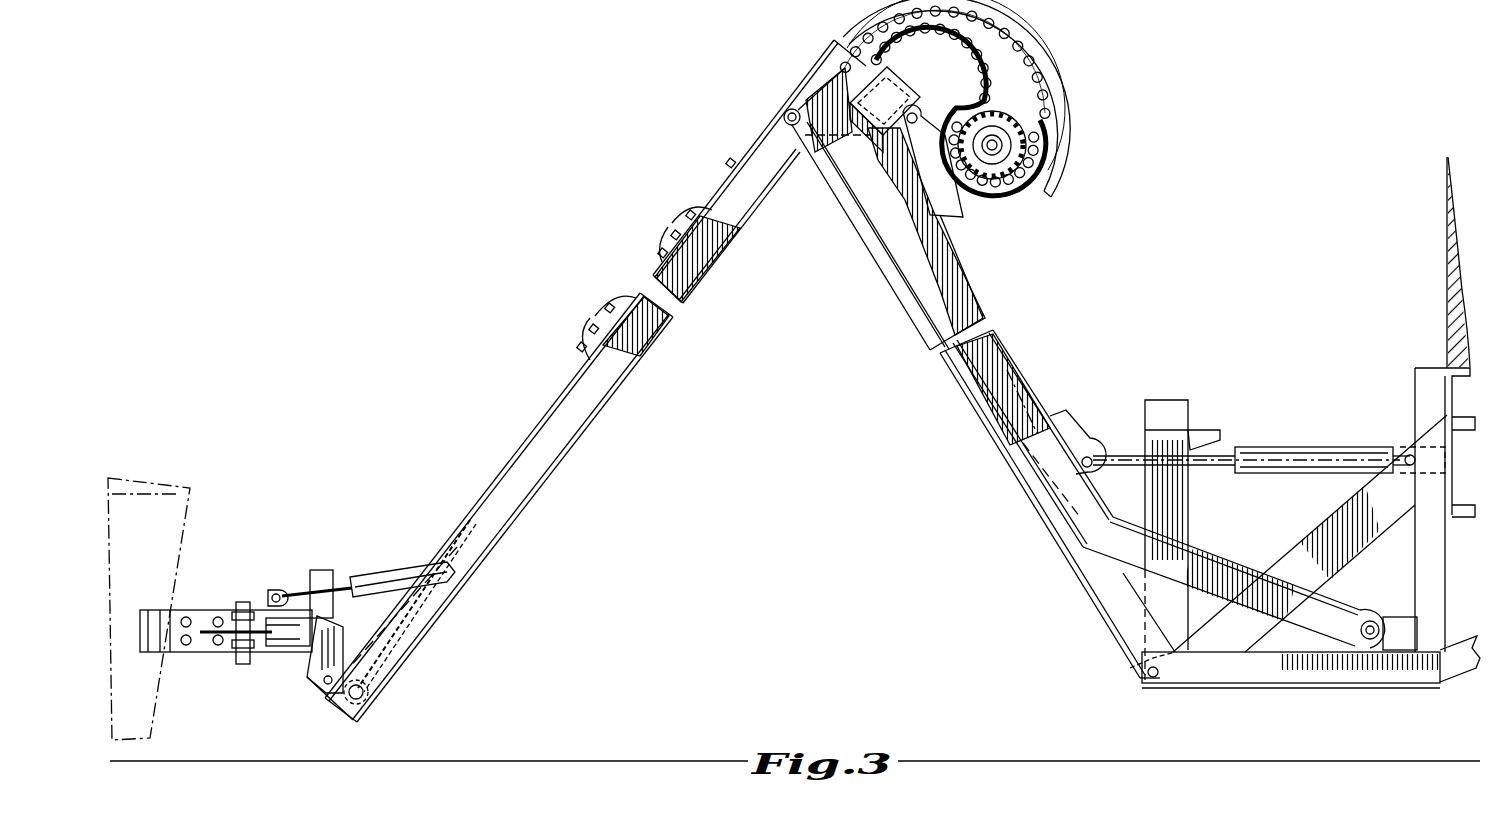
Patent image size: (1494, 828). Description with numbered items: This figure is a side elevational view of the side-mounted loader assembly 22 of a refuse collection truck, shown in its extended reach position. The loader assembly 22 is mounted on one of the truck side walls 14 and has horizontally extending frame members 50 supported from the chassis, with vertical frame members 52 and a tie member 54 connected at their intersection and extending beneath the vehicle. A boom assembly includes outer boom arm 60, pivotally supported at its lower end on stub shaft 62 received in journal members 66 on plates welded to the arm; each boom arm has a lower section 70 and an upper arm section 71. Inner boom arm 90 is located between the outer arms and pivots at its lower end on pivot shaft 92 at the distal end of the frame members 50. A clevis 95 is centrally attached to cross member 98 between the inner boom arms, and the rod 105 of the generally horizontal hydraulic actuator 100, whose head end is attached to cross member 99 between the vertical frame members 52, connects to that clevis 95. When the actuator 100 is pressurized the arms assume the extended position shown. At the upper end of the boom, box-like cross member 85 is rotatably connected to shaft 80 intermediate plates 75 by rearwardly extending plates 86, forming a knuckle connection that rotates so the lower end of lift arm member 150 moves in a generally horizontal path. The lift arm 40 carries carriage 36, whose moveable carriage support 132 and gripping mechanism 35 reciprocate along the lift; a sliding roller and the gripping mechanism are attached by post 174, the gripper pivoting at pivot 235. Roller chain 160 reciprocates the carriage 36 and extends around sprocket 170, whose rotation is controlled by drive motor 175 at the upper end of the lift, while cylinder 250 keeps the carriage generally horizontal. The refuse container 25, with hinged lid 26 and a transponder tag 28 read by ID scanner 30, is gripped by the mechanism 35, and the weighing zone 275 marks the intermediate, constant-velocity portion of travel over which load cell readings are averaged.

The side wall 14 is at (1447, 262).
The loader assembly 22 is at (1050, 292).
The refuse container 25 is at (160, 660).
The lid 26 is at (178, 492).
The transponder tag 28 is at (178, 578).
The ID scanner 30 is at (316, 570).
The gripping mechanism 35 is at (196, 612).
The carriage 36 is at (404, 682).
The lift arm 40 is at (583, 452).
The frame members 50 is at (1345, 683).
The vertical frame members 52 is at (1460, 552).
The tie member 54 is at (1462, 636).
The outer boom arm 60 is at (1025, 395).
The stub shaft 62 is at (1362, 618).
The journal member 66 is at (1392, 617).
The lower arm section 70 is at (1242, 562).
The upper arm section 71 is at (1005, 355).
The plates 75 is at (930, 175).
The shaft 80 is at (925, 125).
The cross member 85 is at (850, 66).
The rearwardly extending plates 86 is at (905, 95).
The inner boom arm 90 is at (885, 272).
The pivot shaft 92 is at (1155, 690).
The clevis 95 is at (1090, 450).
The cross member 98 is at (1015, 455).
The cross member 99 is at (1435, 463).
The hydraulic actuator 100 is at (1318, 447).
The rod 105 is at (1090, 446).
The carriage support 132 is at (432, 612).
The lift arm member 150 is at (625, 358).
The roller chain 160 is at (490, 546).
The sprocket 170 is at (1003, 190).
The post 174 is at (318, 660).
The drive motor 175 is at (1030, 147).
The pivot 235 is at (328, 695).
The cylinder 250 is at (395, 565).
The weighing zone 275 is at (615, 243).